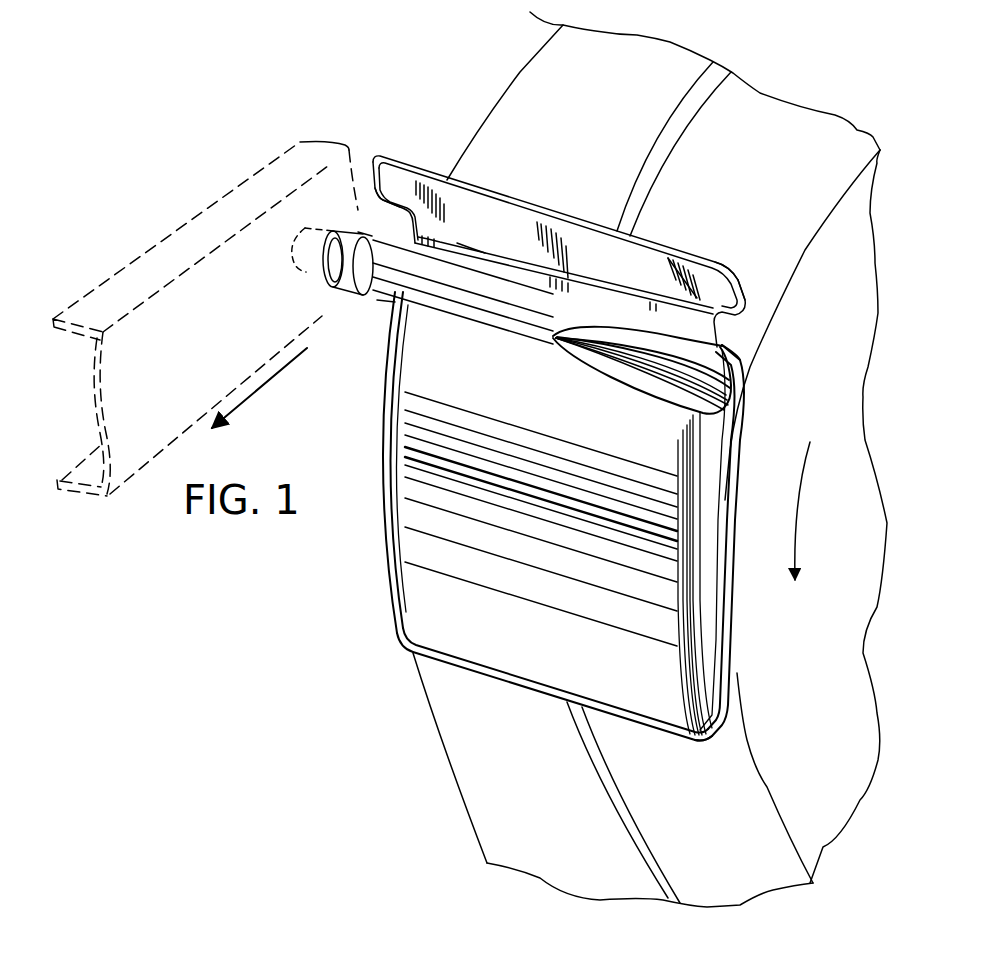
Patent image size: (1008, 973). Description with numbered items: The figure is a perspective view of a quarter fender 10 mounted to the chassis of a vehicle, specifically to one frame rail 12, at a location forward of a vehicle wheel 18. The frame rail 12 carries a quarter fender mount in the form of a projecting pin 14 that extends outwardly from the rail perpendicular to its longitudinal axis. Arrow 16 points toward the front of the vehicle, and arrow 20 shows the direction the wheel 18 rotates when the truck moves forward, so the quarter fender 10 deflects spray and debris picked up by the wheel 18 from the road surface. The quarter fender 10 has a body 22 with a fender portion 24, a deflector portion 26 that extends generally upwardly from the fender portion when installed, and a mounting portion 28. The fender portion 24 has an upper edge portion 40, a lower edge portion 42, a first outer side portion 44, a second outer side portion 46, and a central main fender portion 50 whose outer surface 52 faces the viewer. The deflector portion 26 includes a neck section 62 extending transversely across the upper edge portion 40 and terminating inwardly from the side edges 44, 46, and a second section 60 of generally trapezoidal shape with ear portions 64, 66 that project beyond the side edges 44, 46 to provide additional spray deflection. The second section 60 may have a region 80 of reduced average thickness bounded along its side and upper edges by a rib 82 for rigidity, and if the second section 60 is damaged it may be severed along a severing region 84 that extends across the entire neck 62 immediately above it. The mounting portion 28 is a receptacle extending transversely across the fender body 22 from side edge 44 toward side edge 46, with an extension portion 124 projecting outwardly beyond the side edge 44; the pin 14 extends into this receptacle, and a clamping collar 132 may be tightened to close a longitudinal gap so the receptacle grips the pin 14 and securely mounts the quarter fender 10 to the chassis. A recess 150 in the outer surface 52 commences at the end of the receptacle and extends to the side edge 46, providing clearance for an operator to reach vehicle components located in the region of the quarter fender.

The quarter fender 10 is at (350, 553).
The frame rail 12 is at (188, 238).
The projecting pin 14 is at (290, 268).
The arrow 16 is at (258, 388).
The wheel 18 is at (858, 363).
The arrow 20 is at (797, 516).
The body 22 is at (569, 542).
The fender portion 24 is at (652, 561).
The deflector portion 26 is at (612, 263).
The mounting portion 28 is at (377, 304).
The upper edge portion 40 is at (722, 347).
The lower edge portion 42 is at (638, 725).
The first outer side portion 44 is at (383, 423).
The second outer side portion 46 is at (703, 523).
The central main fender portion 50 is at (487, 513).
The outer surface 52 is at (526, 661).
The second section 60 is at (559, 245).
The neck section 62 is at (547, 277).
The ear portion 64 is at (707, 277).
The ear portion 66 is at (370, 170).
The region of reduced average thickness 80 is at (653, 253).
The rib 82 is at (742, 297).
The severing region 84 is at (467, 240).
The extension portion 124 is at (350, 293).
The clamping collar 132 is at (358, 232).
The recess 150 is at (677, 383).